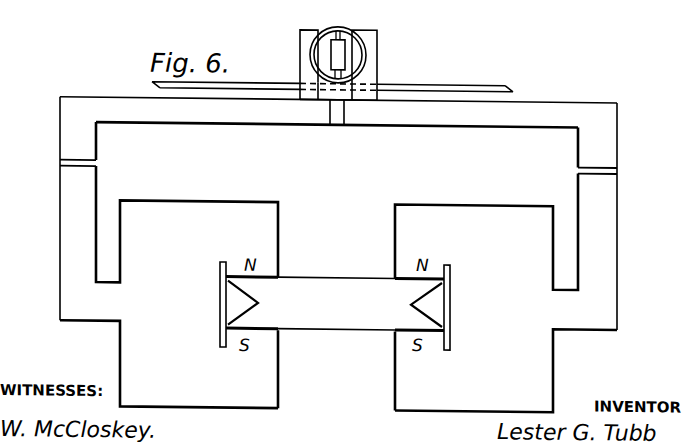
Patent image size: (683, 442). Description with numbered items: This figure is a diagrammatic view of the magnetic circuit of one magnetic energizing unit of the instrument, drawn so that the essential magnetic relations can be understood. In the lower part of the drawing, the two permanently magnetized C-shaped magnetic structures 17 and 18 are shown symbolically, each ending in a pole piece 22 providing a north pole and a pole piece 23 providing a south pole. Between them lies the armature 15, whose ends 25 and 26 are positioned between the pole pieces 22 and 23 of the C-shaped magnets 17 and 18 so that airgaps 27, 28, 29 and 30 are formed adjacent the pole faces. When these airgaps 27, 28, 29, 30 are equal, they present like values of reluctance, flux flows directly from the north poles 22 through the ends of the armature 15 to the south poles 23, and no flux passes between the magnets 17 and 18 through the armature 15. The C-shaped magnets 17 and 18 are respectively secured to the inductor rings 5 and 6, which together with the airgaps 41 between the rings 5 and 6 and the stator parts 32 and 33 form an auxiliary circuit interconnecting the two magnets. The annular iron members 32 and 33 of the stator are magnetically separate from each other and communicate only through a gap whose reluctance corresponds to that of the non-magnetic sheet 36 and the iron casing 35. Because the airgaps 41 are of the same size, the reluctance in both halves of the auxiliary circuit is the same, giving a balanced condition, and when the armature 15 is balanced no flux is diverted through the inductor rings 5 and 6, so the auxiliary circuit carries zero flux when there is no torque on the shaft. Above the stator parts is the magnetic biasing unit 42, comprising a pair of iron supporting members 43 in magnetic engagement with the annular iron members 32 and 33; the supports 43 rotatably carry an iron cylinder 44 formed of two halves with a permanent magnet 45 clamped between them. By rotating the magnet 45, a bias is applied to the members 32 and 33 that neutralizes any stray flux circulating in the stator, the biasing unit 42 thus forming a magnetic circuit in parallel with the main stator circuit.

The inductor ring 5 is at (63, 192).
The inductor ring 6 is at (604, 205).
The armature 15 is at (349, 268).
The C-shaped magnetic structure 17 is at (137, 355).
The C-shaped magnetic structure 18 is at (528, 342).
The pole piece 22 is at (262, 225).
The pole piece 23 is at (260, 379).
The armature end 25 is at (243, 313).
The armature end 26 is at (440, 313).
The airgap 27 is at (284, 274).
The airgap 28 is at (280, 324).
The airgap 29 is at (394, 274).
The airgap 30 is at (390, 326).
The annular iron member 32 is at (127, 96).
The annular iron member 33 is at (560, 100).
The iron casing 35 is at (415, 78).
The annular sheet of non-magnetic material 36 is at (336, 113).
The airgap 41 is at (60, 160).
The magnetic biasing unit 42 is at (373, 75).
The iron supporting member 43 is at (379, 34).
The iron cylinder 44 is at (363, 30).
The permanent magnet 45 is at (342, 51).